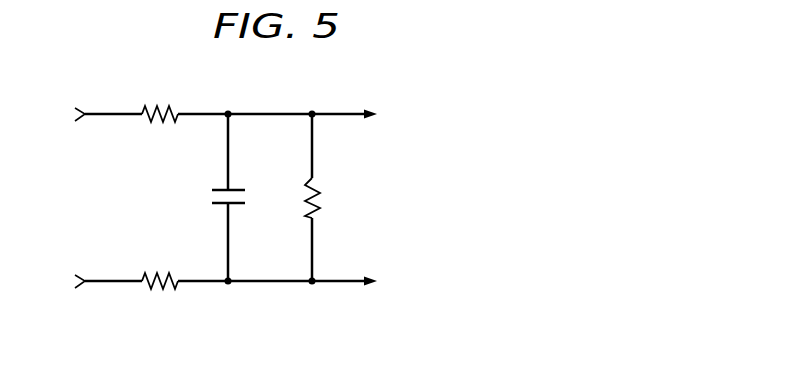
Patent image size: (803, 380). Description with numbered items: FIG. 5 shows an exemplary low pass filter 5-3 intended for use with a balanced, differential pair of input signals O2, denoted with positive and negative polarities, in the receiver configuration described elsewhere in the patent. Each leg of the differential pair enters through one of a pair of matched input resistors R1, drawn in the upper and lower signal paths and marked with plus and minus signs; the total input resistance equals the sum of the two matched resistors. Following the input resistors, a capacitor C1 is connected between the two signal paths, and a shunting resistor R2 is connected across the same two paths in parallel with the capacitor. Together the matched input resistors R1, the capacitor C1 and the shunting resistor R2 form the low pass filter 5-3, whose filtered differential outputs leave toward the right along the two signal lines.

The low pass filter 5-3 is at (424, 132).
The matched input resistors R1 is at (160, 177).
The capacitor C1 is at (217, 197).
The shunting resistor R2 is at (325, 197).
The differential pair of input signals O2 is at (65, 195).